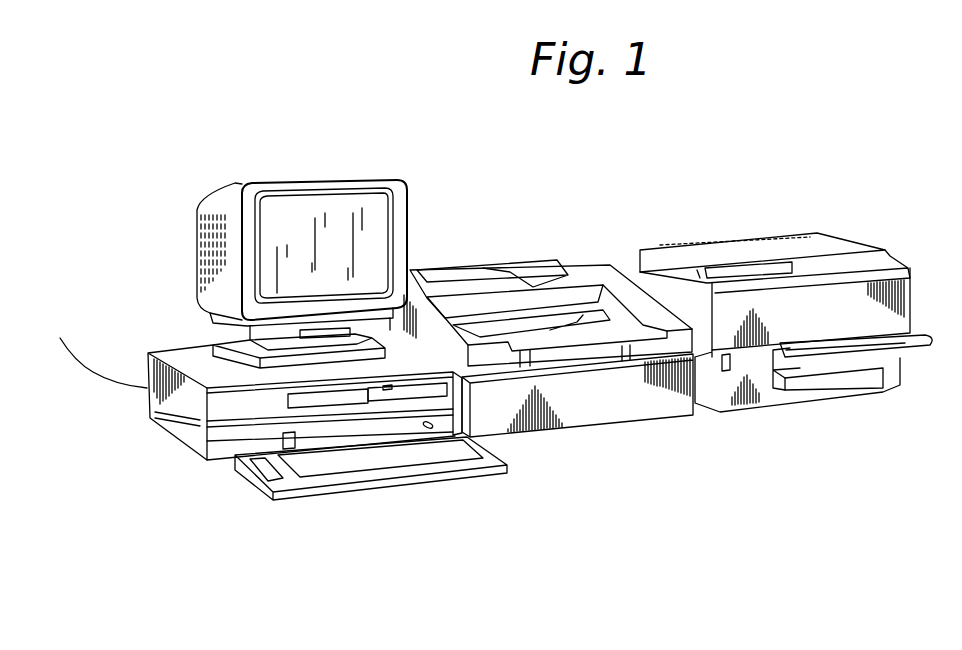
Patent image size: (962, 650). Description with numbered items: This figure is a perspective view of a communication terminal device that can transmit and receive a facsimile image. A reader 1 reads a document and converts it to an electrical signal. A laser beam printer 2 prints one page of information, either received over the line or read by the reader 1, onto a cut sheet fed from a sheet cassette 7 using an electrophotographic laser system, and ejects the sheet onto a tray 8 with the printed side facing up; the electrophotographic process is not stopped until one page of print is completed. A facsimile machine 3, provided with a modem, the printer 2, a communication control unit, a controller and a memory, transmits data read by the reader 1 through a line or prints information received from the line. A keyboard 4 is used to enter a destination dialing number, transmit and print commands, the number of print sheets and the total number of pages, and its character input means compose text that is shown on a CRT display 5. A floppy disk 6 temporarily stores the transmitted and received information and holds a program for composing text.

The reader 1 is at (527, 270).
The laser beam printer 2 is at (787, 233).
The facsimile machine 3 is at (182, 447).
The keyboard 4 is at (95, 375).
The CRT display 5 is at (352, 175).
The floppy disk 6 is at (422, 393).
The sheet cassette 7 is at (813, 385).
The tray 8 is at (930, 333).